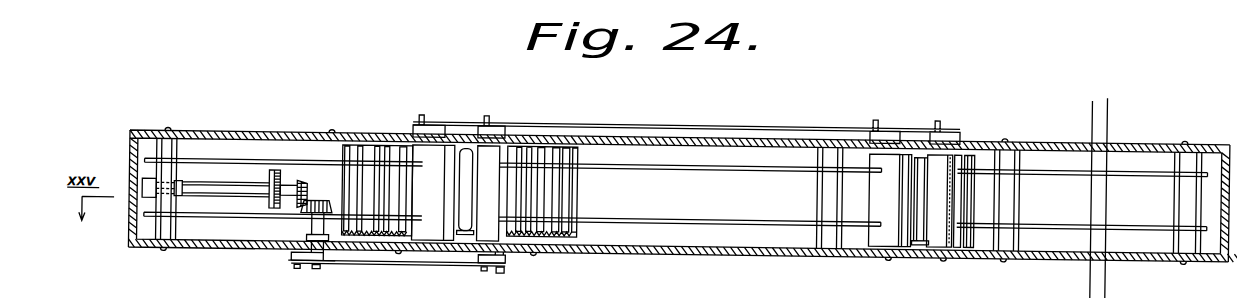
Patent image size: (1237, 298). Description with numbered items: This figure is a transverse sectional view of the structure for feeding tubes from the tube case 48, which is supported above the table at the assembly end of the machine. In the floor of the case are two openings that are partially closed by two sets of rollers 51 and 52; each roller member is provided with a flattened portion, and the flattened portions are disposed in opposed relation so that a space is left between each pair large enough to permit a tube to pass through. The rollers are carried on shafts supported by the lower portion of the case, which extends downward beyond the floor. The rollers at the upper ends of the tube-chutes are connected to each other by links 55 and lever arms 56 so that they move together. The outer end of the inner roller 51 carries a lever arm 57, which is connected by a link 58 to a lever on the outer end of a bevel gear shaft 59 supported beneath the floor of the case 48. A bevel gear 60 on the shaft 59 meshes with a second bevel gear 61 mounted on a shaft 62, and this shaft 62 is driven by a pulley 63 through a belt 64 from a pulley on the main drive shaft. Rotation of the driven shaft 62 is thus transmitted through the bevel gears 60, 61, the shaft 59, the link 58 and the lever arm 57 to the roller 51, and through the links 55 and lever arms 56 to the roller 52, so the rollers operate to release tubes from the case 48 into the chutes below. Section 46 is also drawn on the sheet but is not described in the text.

The casing section 46 is at (1050, 120).
The tube case 48 is at (207, 129).
The inner roller 51 is at (437, 163).
The roller 52 is at (880, 189).
The links 55 is at (663, 107).
The lever arms 56 is at (417, 119).
The lever arm 57 is at (493, 254).
The link 58 is at (405, 261).
The bevel gear shaft 59 is at (335, 252).
The bevel gear 60 is at (320, 197).
The second bevel gear 61 is at (298, 204).
The shaft 62 is at (300, 177).
The pulley 63 is at (270, 174).
The belt 64 is at (277, 205).